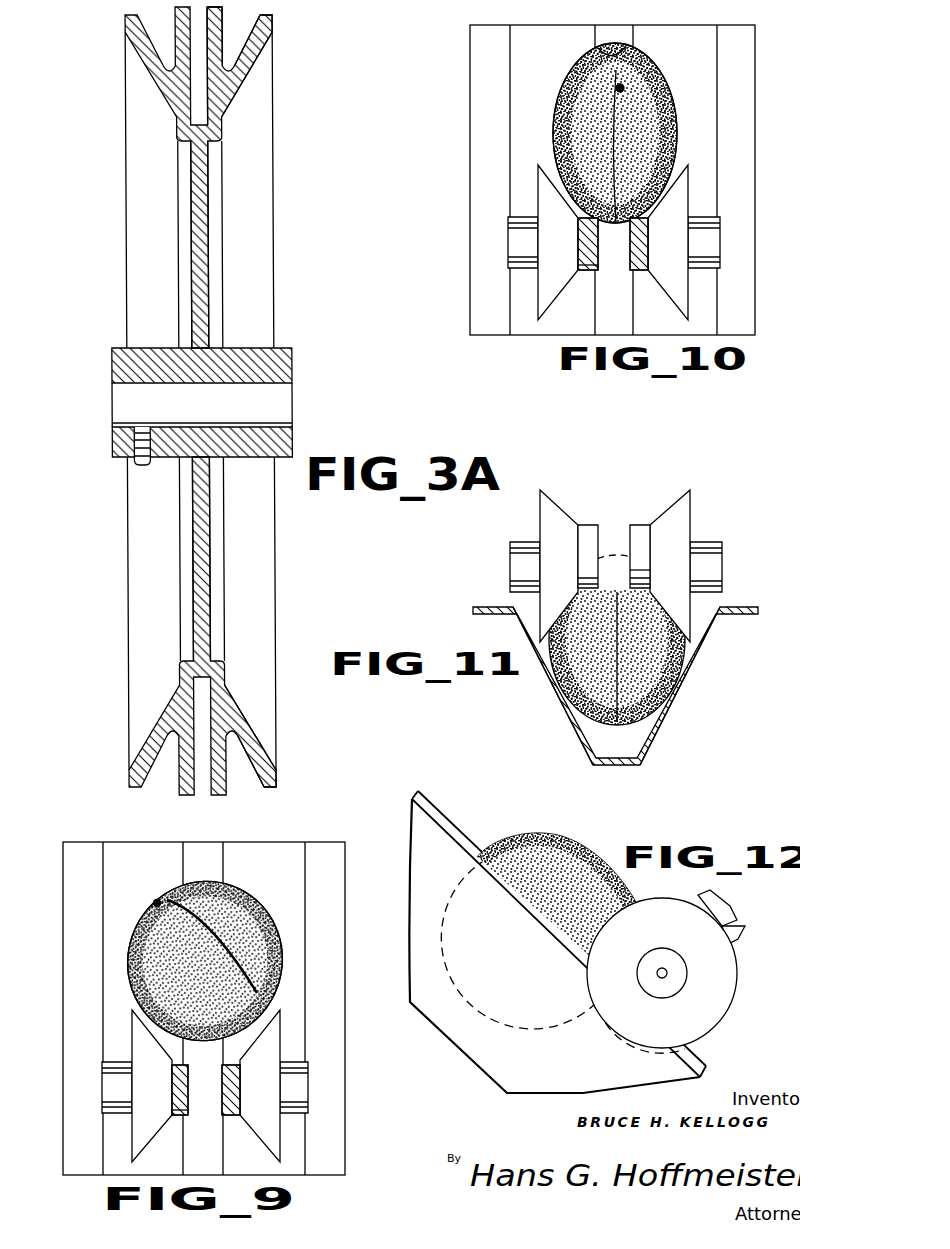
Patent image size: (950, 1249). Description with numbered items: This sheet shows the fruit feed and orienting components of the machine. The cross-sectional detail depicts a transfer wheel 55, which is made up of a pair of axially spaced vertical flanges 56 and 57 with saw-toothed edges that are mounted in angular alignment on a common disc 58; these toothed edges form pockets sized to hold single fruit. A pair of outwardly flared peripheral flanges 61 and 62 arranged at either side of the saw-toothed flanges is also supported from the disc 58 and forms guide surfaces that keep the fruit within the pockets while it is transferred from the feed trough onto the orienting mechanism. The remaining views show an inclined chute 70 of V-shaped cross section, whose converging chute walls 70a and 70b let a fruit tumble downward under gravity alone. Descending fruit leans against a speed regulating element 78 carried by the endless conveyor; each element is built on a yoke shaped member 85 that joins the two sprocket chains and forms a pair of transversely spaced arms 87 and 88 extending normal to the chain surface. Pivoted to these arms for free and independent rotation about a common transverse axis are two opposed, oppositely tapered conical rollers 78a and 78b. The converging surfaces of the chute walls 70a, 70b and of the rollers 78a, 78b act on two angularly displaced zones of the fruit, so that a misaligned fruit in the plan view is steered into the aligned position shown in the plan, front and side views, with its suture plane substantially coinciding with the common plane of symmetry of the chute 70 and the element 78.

In FIG. 3A, the transfer wheel 55 is at (225, 115).
In FIG. 3A, the saw-toothed vertical flange 56 is at (213, 20).
In FIG. 3A, the saw-toothed vertical flange 57 is at (182, 27).
In FIG. 3A, the disc 58 is at (205, 250).
In FIG. 3A, the outwardly flared peripheral flange 61 is at (257, 750).
In FIG. 3A, the outwardly flared peripheral flange 62 is at (140, 740).
In FIG. 10, the inclined chute 70 is at (503, 95).
In FIG. 11, the inclined chute 70 is at (648, 742).
In FIG. 9, the inclined chute 70 is at (328, 1076).
In FIG. 12, the inclined chute 70 is at (420, 942).
In FIG. 10, the chute wall 70a is at (548, 54).
In FIG. 11, the chute wall 70a is at (568, 722).
In FIG. 9, the chute wall 70a is at (150, 869).
In FIG. 12, the chute wall 70a is at (592, 1067).
In FIG. 10, the chute wall 70b is at (691, 54).
In FIG. 11, the chute wall 70b is at (690, 668).
In FIG. 9, the chute wall 70b is at (270, 876).
In FIG. 10, the speed regulating element 78 is at (535, 283).
In FIG. 11, the speed regulating element 78 is at (705, 514).
In FIG. 9, the speed regulating element 78 is at (146, 1049).
In FIG. 12, the speed regulating element 78 is at (724, 958).
In FIG. 10, the conical roller 78a is at (566, 254).
In FIG. 11, the conical roller 78a is at (571, 559).
In FIG. 9, the conical roller 78a is at (160, 1099).
In FIG. 12, the conical roller 78a is at (720, 999).
In FIG. 10, the conical roller 78b is at (681, 254).
In FIG. 11, the conical roller 78b is at (684, 559).
In FIG. 9, the conical roller 78b is at (272, 1114).
In FIG. 10, the yoke shaped member 85 is at (583, 272).
In FIG. 11, the yoke shaped member 85 is at (631, 525).
In FIG. 9, the yoke shaped member 85 is at (180, 1113).
In FIG. 12, the yoke shaped member 85 is at (712, 903).
In FIG. 10, the arm 87 is at (590, 266).
In FIG. 11, the arm 87 is at (583, 525).
In FIG. 9, the arm 87 is at (186, 1104).
In FIG. 12, the arm 87 is at (738, 929).
In FIG. 10, the arm 88 is at (640, 262).
In FIG. 11, the arm 88 is at (637, 527).
In FIG. 9, the arm 88 is at (230, 1113).